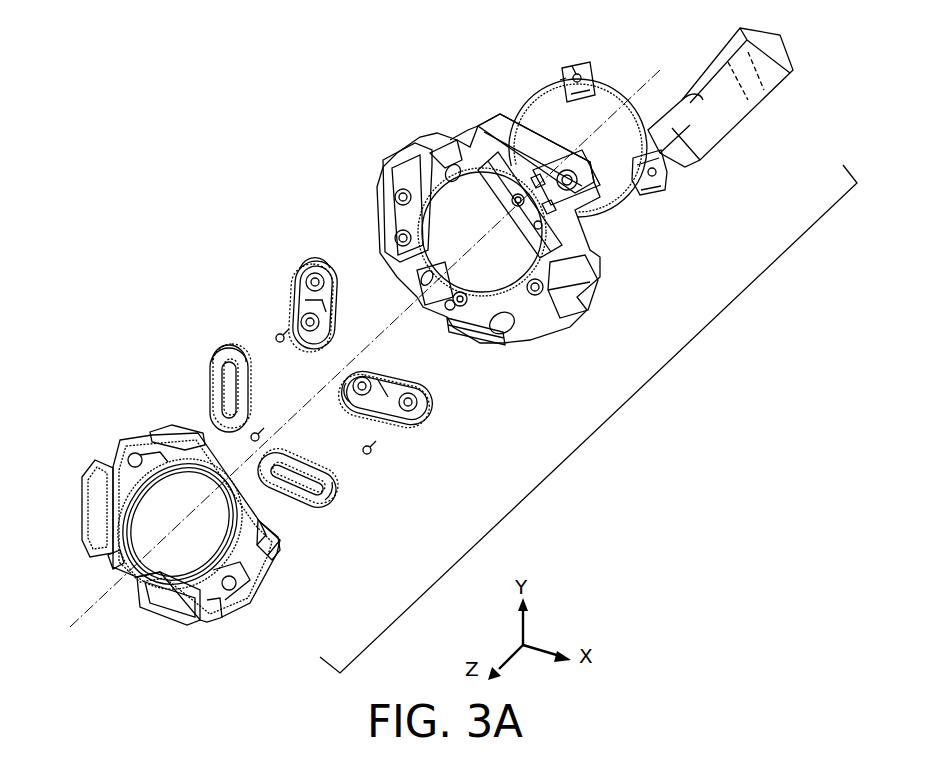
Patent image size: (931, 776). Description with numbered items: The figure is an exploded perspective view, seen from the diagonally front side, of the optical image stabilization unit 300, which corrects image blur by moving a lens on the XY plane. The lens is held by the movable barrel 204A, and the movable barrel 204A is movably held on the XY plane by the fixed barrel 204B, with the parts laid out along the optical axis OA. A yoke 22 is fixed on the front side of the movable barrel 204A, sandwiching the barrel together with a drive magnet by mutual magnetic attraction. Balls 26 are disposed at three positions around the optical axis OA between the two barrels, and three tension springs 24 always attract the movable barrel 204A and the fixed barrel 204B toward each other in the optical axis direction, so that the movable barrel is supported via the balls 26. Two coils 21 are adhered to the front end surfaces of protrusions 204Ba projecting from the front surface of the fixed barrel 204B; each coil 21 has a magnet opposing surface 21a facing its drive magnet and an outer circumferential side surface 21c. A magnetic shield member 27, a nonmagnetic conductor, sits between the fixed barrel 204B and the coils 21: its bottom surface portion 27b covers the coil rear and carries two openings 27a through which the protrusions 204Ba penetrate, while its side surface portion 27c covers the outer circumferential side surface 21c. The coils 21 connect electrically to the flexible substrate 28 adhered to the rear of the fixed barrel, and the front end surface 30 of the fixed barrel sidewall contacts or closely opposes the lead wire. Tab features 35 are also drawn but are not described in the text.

The optical axis OA is at (95, 600).
The optical image stabilization unit 300 is at (600, 427).
The flexible substrate 28 is at (610, 218).
The tab portion 35 is at (565, 84).
The 1B fixed barrel 204B is at (540, 338).
The protrusion 204Ba is at (398, 238).
The front end surface 30 is at (480, 345).
The magnetic shield member 27 is at (368, 342).
The openings 27a is at (310, 320).
The bottom surface portion 27b is at (318, 312).
The side surface portion 27c is at (331, 292).
The coil 21 is at (279, 420).
The magnet opposing surface 21a is at (274, 428).
The outer circumferential side surface 21c is at (230, 353).
The balls 26 is at (283, 343).
The 1B movable barrel 204A is at (220, 592).
The yoke 22 is at (150, 593).
The tension springs 24 is at (113, 566).